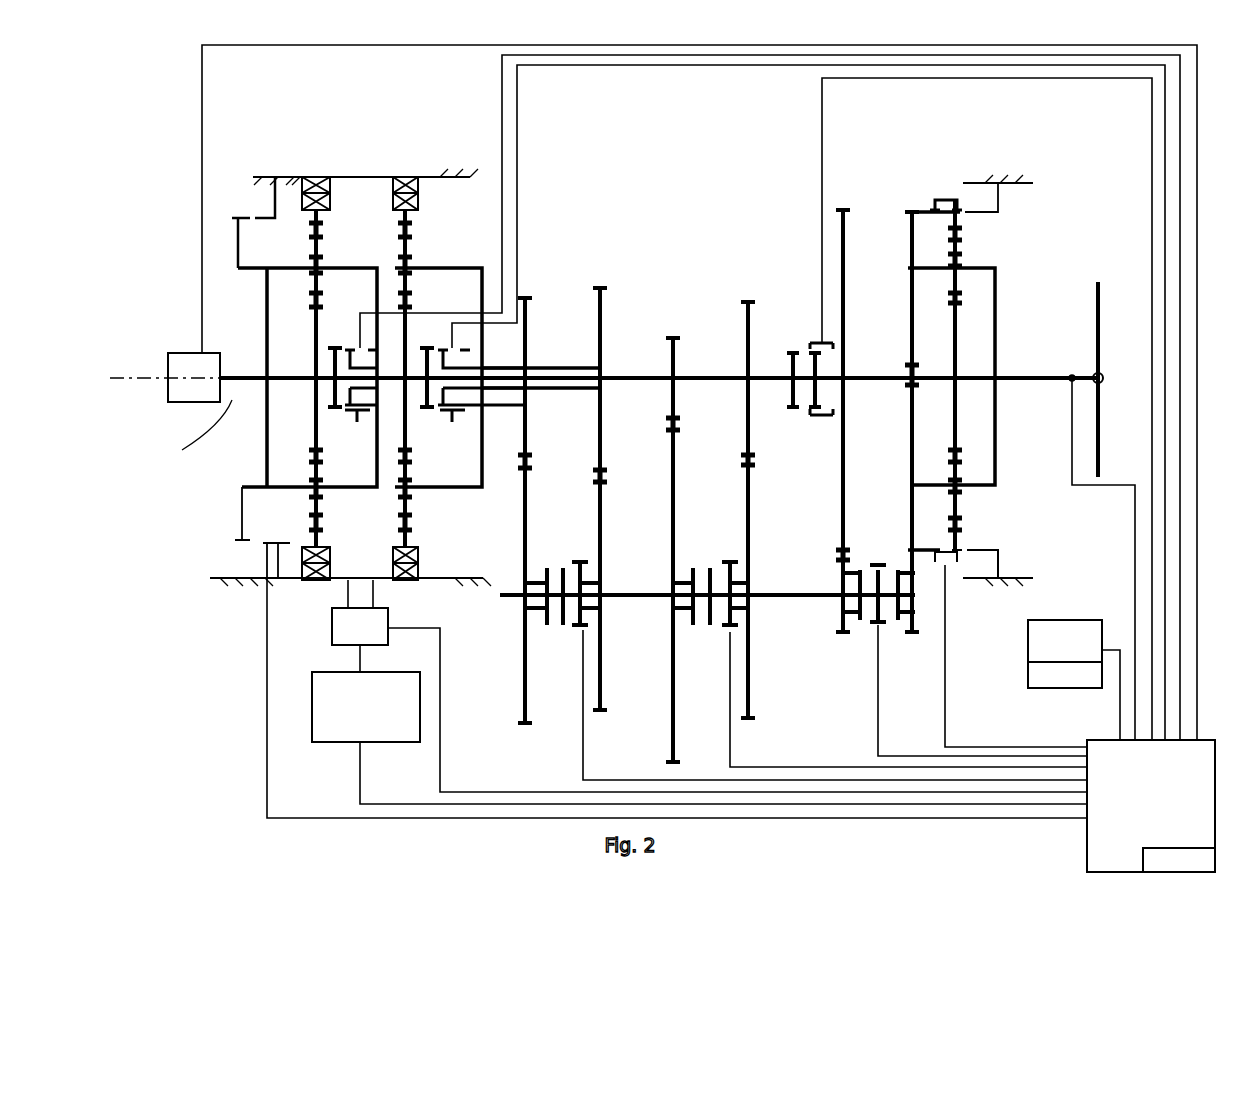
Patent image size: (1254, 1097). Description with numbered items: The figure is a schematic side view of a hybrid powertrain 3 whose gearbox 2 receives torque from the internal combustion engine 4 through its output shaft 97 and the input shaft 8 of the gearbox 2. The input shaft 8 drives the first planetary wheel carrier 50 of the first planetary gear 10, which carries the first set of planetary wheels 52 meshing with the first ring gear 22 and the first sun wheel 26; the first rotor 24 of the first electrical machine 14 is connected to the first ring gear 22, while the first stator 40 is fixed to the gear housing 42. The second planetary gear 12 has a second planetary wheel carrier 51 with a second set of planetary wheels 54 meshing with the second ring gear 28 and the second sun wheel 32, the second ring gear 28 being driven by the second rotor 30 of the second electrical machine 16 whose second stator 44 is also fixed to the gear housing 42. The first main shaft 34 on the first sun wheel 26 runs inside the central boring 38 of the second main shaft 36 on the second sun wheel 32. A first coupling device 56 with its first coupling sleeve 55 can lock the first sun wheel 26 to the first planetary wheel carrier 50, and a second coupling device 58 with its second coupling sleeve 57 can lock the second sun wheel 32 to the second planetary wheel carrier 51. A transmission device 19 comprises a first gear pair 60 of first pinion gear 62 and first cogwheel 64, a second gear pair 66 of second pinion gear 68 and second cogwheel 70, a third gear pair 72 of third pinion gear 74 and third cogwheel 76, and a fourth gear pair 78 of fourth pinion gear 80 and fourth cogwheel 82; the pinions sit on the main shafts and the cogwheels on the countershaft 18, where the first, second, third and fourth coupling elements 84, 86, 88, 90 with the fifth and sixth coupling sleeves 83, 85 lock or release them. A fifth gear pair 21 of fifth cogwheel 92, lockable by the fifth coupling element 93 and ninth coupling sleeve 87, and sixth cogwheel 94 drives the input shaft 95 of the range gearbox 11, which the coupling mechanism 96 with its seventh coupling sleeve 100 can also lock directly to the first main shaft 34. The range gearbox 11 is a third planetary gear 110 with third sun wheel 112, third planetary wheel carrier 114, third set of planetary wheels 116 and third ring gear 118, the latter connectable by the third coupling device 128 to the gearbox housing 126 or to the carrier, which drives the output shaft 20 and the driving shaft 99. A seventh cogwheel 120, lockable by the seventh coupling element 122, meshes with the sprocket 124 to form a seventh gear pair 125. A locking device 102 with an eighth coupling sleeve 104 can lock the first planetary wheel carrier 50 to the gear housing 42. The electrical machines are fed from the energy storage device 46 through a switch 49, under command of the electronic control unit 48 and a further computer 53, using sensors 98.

The gearbox 2 is at (250, 710).
The hybrid powertrain 3 is at (255, 650).
The internal combustion engine 4 is at (175, 353).
The input shaft 8 is at (250, 375).
The first planetary gear 10 is at (195, 227).
The range gearbox 11 is at (884, 162).
The second planetary gear 12 is at (530, 220).
The first electrical machine 14 is at (190, 160).
The second electrical machine 16 is at (480, 195).
The countershaft 18 is at (652, 623).
The transmission device 19 is at (675, 230).
The output shaft 20 is at (1058, 378).
The fifth gear pair 21 is at (830, 560).
The first ring gear 22 is at (305, 233).
The first rotor 24 is at (328, 183).
The first sun wheel 26 is at (312, 405).
The second ring gear 28 is at (412, 231).
The second rotor 30 is at (394, 195).
The second sun wheel 32 is at (410, 355).
The first main shaft 34 is at (710, 365).
The second main shaft 36 is at (507, 390).
The central boring 38 is at (617, 365).
The first stator 40 is at (295, 175).
The gear housing 42 is at (390, 178).
The second stator 44 is at (420, 175).
The energy storage device 46 is at (310, 710).
The electronic control unit 48 is at (1087, 740).
The switch 49 is at (333, 644).
The first planetary wheel carrier 50 is at (270, 273).
The second planetary wheel carrier 51 is at (485, 460).
The first set of planetary wheels 52 is at (321, 302).
The computer 53 is at (1080, 620).
The second set of planetary wheels 54 is at (426, 302).
The first coupling sleeve 55 is at (363, 420).
The first coupling device 56 is at (337, 359).
The second coupling sleeve 57 is at (460, 418).
The second coupling device 58 is at (460, 375).
The first gear pair 60 is at (675, 320).
The first pinion gear 62 is at (678, 408).
The first cogwheel 64 is at (678, 472).
The second gear pair 66 is at (605, 265).
The second pinion gear 68 is at (608, 420).
The second cogwheel 70 is at (603, 518).
The third gear pair 72 is at (750, 270).
The third pinion gear 74 is at (750, 415).
The third cogwheel 76 is at (750, 540).
The fourth gear pair 78 is at (530, 278).
The fourth pinion gear 80 is at (533, 415).
The fourth cogwheel 82 is at (535, 527).
The fifth coupling sleeve 83 is at (724, 560).
The first coupling element 84 is at (695, 630).
The sixth coupling sleeve 85 is at (584, 562).
The second coupling element 86 is at (585, 625).
The ninth coupling sleeve 87 is at (880, 565).
The third coupling element 88 is at (750, 625).
The fourth coupling element 90 is at (553, 630).
The fifth cogwheel 92 is at (852, 567).
The fifth coupling element 93 is at (868, 635).
The sixth cogwheel 94 is at (857, 490).
The input shaft of the range gearbox 95 is at (880, 355).
The coupling mechanism 96 is at (788, 328).
The output shaft of the internal combustion engine 97 is at (199, 437).
The sensors 98 is at (298, 580).
The driving shaft 99 is at (1104, 375).
The seventh coupling sleeve 100 is at (825, 415).
The locking device 102 is at (242, 540).
The eighth coupling sleeve 104 is at (263, 552).
The third planetary gear 110 is at (1040, 205).
The third sun wheel 112 is at (970, 430).
The third planetary wheel carrier 114 is at (983, 485).
The third set of planetary wheels 116 is at (980, 295).
The third ring gear 118 is at (935, 215).
The seventh cogwheel 120 is at (925, 692).
The seventh coupling element 122 is at (885, 625).
The sprocket 124 is at (920, 210).
The seventh gear pair 125 is at (925, 580).
The gearbox housing 126 is at (1000, 175).
The third coupling device 128 is at (950, 200).